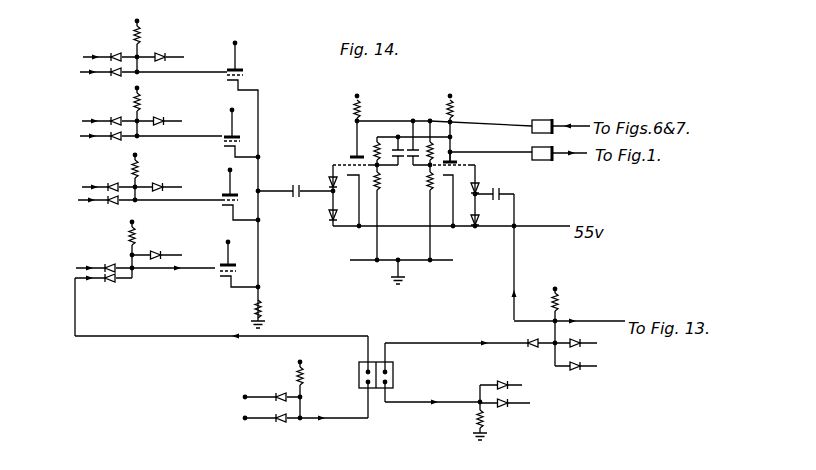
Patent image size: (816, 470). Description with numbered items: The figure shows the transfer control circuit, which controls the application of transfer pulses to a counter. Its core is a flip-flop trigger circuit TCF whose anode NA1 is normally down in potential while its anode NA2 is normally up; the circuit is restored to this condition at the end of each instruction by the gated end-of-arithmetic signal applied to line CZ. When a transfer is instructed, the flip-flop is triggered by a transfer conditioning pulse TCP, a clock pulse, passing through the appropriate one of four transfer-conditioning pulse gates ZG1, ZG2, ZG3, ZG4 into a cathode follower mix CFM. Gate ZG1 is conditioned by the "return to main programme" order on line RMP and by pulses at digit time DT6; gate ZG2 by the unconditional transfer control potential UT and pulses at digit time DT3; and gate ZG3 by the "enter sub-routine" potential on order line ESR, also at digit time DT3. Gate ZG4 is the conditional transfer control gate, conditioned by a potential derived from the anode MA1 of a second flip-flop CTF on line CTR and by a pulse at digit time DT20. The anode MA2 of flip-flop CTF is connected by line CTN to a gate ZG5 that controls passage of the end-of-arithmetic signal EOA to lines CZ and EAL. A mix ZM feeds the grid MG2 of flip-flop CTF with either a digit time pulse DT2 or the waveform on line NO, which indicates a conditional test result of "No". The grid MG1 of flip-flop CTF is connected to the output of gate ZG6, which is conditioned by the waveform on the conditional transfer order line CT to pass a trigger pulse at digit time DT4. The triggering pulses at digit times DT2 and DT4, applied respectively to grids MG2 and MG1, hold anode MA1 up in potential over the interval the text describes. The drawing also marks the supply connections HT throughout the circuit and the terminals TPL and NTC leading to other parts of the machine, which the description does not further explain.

The transfer-conditioning pulse gate ZG1 is at (142, 52).
The transfer-conditioning pulse gate ZG2 is at (142, 118).
The transfer-conditioning pulse gate ZG3 is at (140, 184).
The conditional transfer control gate ZG4 is at (137, 252).
The gate ZG5 is at (562, 319).
The gate ZG6 is at (281, 391).
The high tension supply HT is at (137, 21).
The return to main programme order line RMP is at (90, 57).
The transfer conditioning pulse TCP is at (135, 199).
The unconditional transfer control potential UT is at (96, 121).
The enter sub-routine order line ESR is at (90, 187).
The digit time DT6 is at (179, 57).
The digit time DT3 is at (177, 154).
The digit time DT20 is at (388, 299).
The digit time pulse DT2 is at (522, 385).
The digit time DT4 is at (266, 419).
The cathode follower mix CFM is at (259, 270).
The line CTR is at (222, 338).
The flip-flop trigger circuit TCF is at (345, 107).
The anode NA1 is at (354, 157).
The anode NA2 is at (454, 156).
The output terminal TPL is at (569, 126).
The output terminal NTC is at (556, 155).
The line CZ is at (514, 267).
The line EAL is at (587, 323).
The end-of-arithmetic signal EOA is at (596, 366).
The line NO is at (530, 404).
The mix ZM is at (479, 402).
The flip-flop CTF is at (376, 359).
The anode MA1 is at (367, 370).
The anode MA2 is at (387, 371).
The grid MG1 is at (366, 384).
The grid MG2 is at (387, 382).
The conditional transfer order line CT is at (248, 397).
The line CTN is at (455, 336).